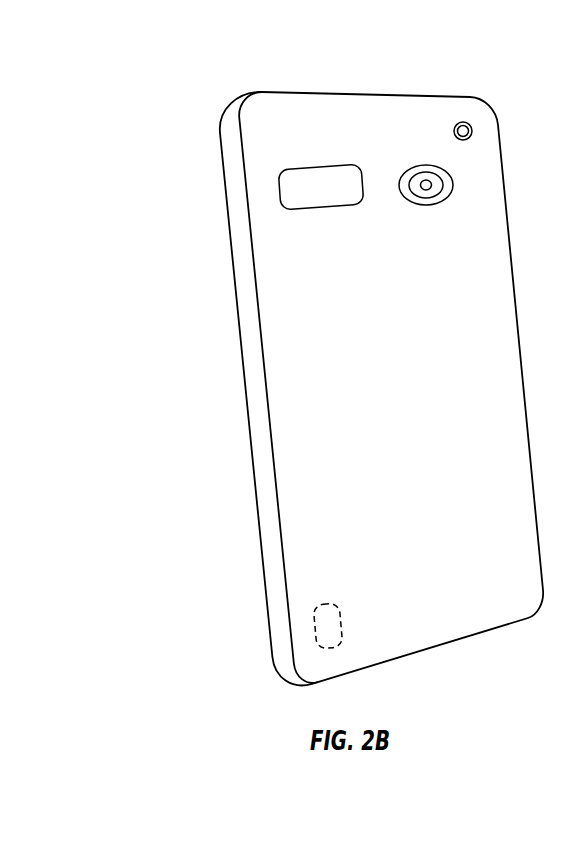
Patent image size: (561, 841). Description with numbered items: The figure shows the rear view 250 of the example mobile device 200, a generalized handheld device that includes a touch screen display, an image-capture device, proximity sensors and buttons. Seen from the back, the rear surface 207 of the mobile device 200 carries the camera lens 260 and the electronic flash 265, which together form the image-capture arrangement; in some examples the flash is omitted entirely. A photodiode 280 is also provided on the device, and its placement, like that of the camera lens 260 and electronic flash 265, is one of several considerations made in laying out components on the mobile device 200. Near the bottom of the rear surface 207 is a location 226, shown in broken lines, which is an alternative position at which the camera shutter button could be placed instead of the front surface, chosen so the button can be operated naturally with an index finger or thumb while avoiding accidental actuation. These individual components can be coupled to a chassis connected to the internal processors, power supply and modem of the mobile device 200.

The rear view 250 is at (233, 54).
The mobile device 200 is at (370, 92).
The rear surface 207 is at (332, 562).
The electronic flash 265 is at (318, 188).
The camera lens 260 is at (425, 168).
The photodiode 280 is at (472, 130).
The location 226 is at (327, 627).